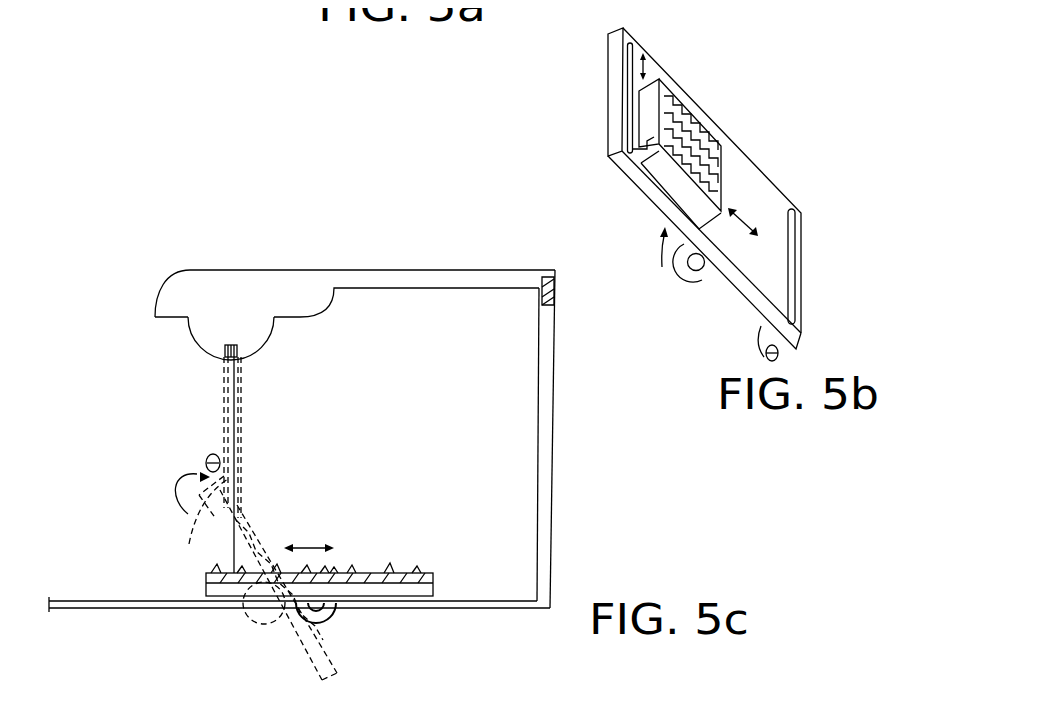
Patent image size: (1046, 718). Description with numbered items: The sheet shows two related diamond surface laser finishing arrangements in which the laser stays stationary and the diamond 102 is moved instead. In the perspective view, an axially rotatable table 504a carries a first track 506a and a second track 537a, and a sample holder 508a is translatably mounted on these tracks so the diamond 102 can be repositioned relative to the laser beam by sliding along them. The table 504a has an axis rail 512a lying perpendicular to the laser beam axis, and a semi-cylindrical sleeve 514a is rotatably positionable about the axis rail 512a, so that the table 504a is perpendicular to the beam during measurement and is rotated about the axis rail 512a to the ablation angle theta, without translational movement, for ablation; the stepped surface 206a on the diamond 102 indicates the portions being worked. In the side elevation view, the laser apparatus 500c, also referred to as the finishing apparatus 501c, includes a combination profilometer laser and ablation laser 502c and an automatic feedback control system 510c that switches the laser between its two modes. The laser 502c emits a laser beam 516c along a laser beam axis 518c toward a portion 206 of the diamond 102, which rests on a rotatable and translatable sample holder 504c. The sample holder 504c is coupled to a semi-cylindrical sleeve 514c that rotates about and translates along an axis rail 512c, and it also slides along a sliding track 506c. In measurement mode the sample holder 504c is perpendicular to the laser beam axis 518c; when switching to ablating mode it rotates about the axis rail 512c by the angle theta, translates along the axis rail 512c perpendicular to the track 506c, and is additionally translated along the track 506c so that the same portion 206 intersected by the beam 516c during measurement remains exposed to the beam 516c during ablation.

In FIG. 5b, the axially rotatable table 504a is at (678, 86).
In FIG. 5b, the second track 537a is at (619, 70).
In FIG. 5b, the first track 506a is at (785, 278).
In FIG. 5b, the diamond 102 is at (709, 134).
In FIG. 5c, the diamond 102 is at (408, 564).
In FIG. 5b, the stepped teeth 206a is at (691, 116).
In FIG. 5b, the sample holder 508a is at (654, 167).
In FIG. 5b, the axis rail 512a is at (679, 241).
In FIG. 5b, the semi-cylindrical sleeve 514a is at (699, 261).
In FIG. 5c, the laser apparatus 500c is at (69, 334).
In FIG. 5c, the automatic feedback control system 510c is at (167, 291).
In FIG. 5c, the combination profilometer laser and ablation laser 502c is at (259, 332).
In FIG. 5c, the diamond surface laser finishing apparatus 501c is at (548, 414).
In FIG. 5c, the laser beam 516c is at (227, 416).
In FIG. 5c, the laser beam axis 518c is at (279, 397).
In FIG. 5c, the portion 206 is at (186, 531).
In FIG. 5c, the axis rail 512c is at (329, 612).
In FIG. 5c, the sample holder 504c is at (409, 581).
In FIG. 5c, the sliding track 506c is at (156, 599).
In FIG. 5c, the semi-cylindrical sleeve 514c is at (322, 600).